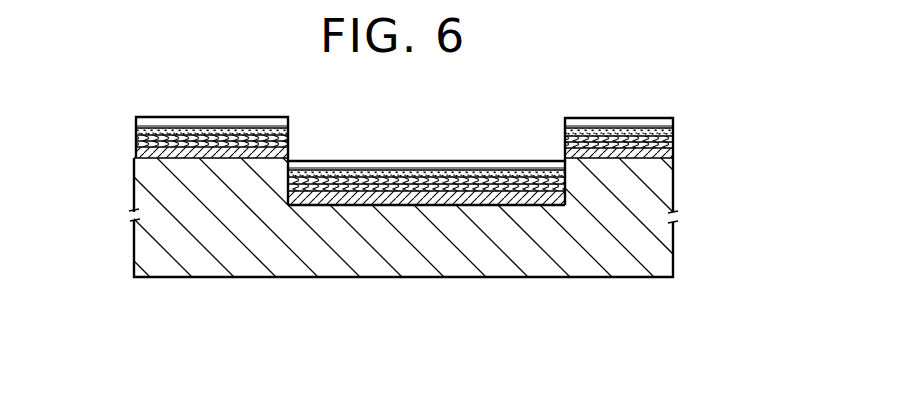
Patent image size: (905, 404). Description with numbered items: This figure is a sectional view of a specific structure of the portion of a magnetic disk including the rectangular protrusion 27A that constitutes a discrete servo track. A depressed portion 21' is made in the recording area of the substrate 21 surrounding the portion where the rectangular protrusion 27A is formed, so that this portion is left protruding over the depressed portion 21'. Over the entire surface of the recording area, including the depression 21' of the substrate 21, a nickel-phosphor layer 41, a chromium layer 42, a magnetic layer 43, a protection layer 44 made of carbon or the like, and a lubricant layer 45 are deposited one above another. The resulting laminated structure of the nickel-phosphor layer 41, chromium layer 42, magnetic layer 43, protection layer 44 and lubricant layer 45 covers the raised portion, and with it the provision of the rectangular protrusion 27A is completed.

The substrate 21 is at (390, 244).
The depressed portion 21' is at (398, 267).
The rectangular protrusion 27A is at (296, 130).
The nickel-phosphor layer 41 is at (136, 153).
The chromium layer 42 is at (136, 142).
The magnetic layer 43 is at (136, 132).
The protection layer 44 is at (136, 127).
The lubricant layer 45 is at (190, 117).